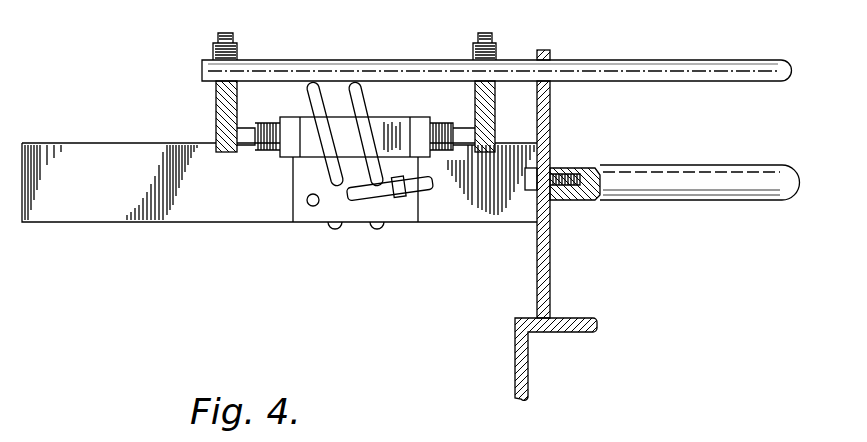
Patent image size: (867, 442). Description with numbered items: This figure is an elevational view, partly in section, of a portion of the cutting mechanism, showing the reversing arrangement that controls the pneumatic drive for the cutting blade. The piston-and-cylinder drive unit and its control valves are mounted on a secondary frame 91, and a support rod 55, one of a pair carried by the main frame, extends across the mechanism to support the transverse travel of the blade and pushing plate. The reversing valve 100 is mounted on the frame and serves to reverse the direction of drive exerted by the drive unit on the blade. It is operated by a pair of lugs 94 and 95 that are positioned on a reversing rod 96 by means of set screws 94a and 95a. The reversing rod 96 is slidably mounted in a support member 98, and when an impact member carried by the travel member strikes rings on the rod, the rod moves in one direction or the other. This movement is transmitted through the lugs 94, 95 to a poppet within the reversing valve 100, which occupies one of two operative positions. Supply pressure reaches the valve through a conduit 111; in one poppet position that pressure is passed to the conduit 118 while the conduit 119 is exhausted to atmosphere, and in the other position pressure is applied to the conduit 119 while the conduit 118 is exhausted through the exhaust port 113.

The secondary frame 91 is at (97, 217).
The lug 94 is at (216, 115).
The set screw 94a is at (228, 33).
The lug 95 is at (490, 95).
The set screw 95a is at (480, 33).
The reversing rod 96 is at (698, 38).
The support member 98 is at (551, 115).
The support rod 55 is at (687, 201).
The reversing valve 100 is at (298, 180).
The conduit 118 is at (311, 101).
The conduit 119 is at (358, 100).
The exhaust port 113 is at (317, 205).
The conduit 111 is at (432, 192).